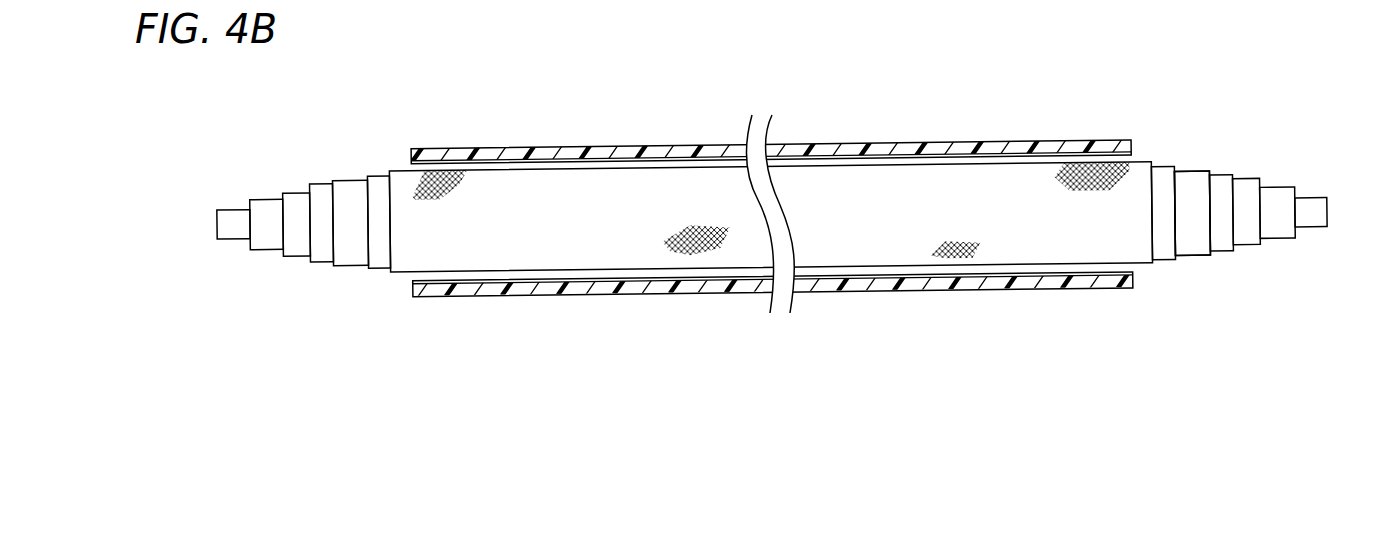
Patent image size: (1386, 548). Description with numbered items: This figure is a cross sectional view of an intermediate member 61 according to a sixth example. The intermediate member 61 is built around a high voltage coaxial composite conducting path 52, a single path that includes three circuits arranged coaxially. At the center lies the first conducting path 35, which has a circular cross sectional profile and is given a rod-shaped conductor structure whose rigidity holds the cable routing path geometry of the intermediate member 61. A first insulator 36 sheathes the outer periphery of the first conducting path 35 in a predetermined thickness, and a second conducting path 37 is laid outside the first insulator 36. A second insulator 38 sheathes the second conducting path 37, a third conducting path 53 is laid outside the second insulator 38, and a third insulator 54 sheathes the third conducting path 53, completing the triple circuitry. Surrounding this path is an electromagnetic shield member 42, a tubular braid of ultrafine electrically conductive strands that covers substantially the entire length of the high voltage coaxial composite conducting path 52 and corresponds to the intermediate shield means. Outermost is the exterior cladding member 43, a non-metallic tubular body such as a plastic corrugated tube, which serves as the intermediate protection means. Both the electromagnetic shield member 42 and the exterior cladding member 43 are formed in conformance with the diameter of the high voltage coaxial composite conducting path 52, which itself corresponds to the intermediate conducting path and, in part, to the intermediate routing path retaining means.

The intermediate member 61 is at (788, 205).
The exterior cladding member 43 is at (658, 148).
The electromagnetic shield member 42 is at (1090, 252).
The high voltage coaxial composite conducting path 52 is at (1200, 166).
The third conducting path 53 is at (1190, 238).
The third insulator 54 is at (1163, 253).
The second insulator 38 is at (1220, 253).
The second conducting path 37 is at (1245, 235).
The first insulator 36 is at (1278, 227).
The first conducting path 35 is at (1312, 197).